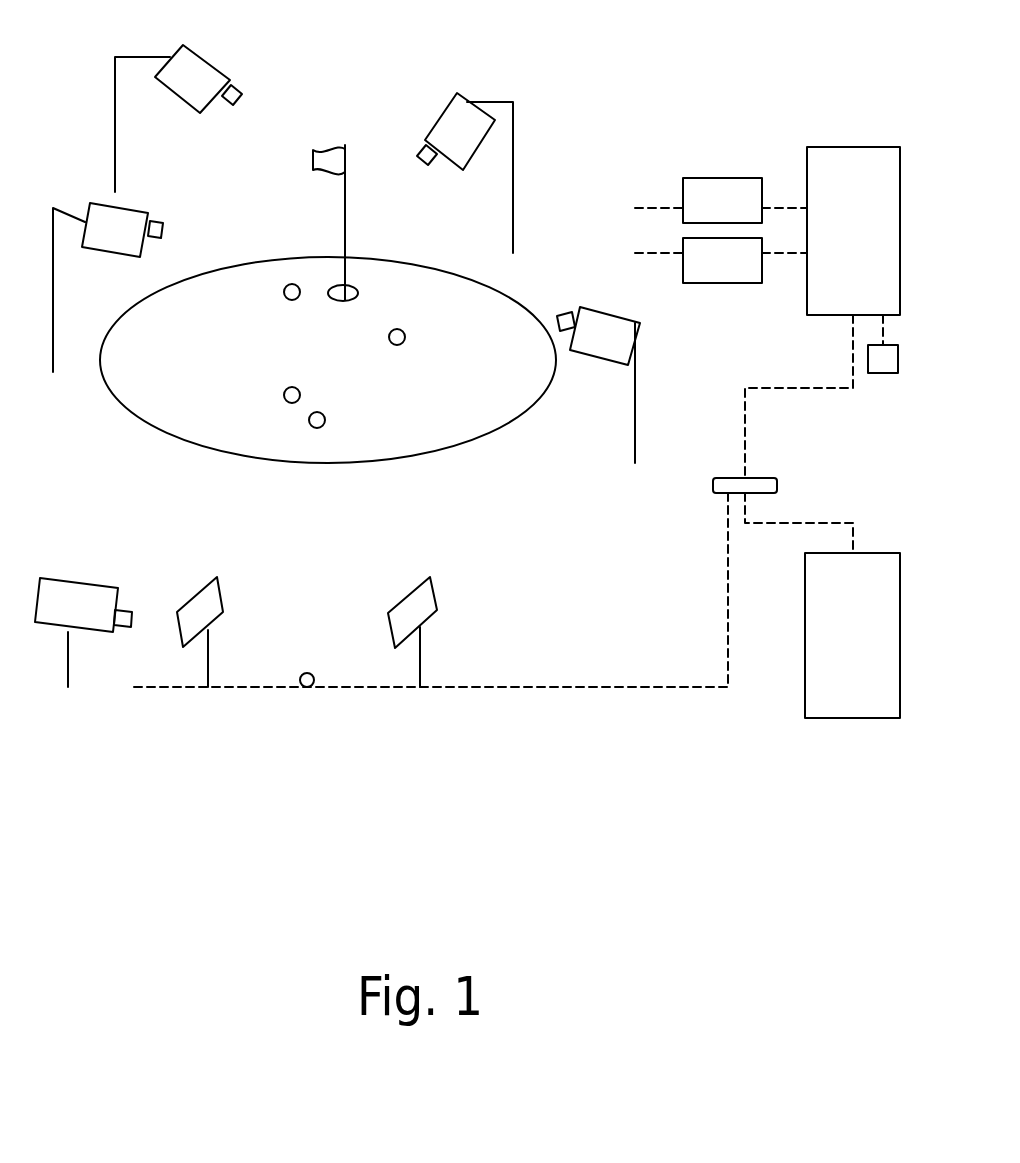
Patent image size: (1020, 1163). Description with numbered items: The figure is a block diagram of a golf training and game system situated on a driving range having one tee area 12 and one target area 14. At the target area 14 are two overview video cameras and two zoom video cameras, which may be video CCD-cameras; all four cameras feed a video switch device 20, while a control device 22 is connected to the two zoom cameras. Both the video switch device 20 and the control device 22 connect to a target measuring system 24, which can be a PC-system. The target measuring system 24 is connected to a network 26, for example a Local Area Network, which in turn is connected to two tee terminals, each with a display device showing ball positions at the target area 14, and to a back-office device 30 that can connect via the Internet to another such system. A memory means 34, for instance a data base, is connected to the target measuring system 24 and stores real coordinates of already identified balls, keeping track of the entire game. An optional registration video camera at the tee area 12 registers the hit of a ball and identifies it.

The tee area 12 is at (294, 693).
The target area 14 is at (140, 417).
The video switch device 20 is at (710, 177).
The control device 22 is at (727, 285).
The target measuring system 24 is at (840, 147).
The network 26 is at (713, 488).
The back-office device 30 is at (805, 705).
The memory means 34 is at (878, 375).